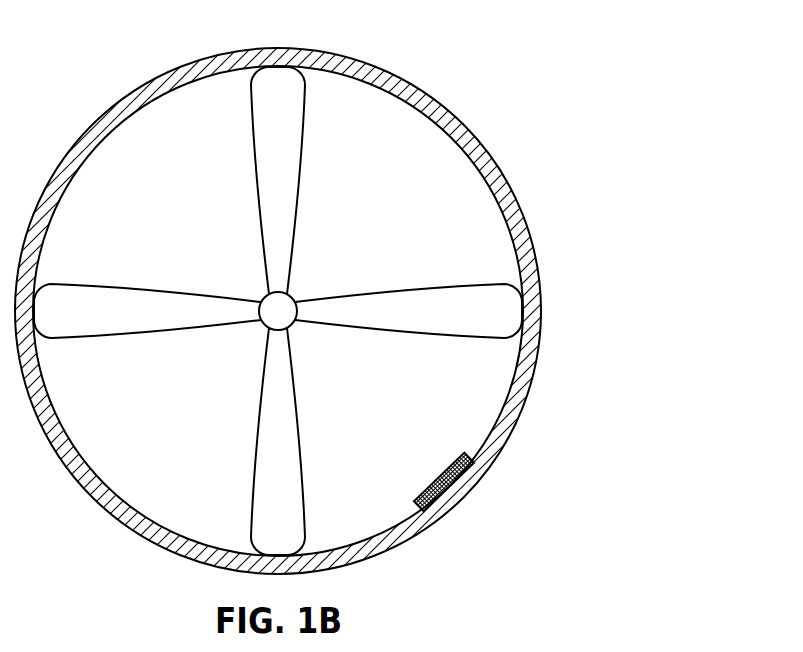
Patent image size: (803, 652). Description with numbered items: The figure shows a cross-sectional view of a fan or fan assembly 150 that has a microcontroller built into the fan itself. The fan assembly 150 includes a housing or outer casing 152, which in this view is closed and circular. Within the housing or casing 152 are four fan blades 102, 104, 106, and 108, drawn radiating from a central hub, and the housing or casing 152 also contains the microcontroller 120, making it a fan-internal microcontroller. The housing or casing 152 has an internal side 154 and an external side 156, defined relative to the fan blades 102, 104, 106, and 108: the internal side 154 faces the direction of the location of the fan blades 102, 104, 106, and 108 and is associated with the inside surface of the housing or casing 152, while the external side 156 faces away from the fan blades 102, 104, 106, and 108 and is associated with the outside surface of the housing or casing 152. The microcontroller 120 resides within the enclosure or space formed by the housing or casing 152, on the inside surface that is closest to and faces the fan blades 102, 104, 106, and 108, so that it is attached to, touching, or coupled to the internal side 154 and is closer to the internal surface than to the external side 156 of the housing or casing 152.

The fan assembly 150 is at (385, 295).
The fan blade 102 is at (306, 127).
The fan blade 104 is at (80, 285).
The fan blade 106 is at (251, 475).
The fan blade 108 is at (458, 285).
The microcontroller 120 is at (450, 484).
The housing or outer casing 152 is at (533, 372).
The internal side 154 is at (503, 408).
The external side 156 is at (513, 432).